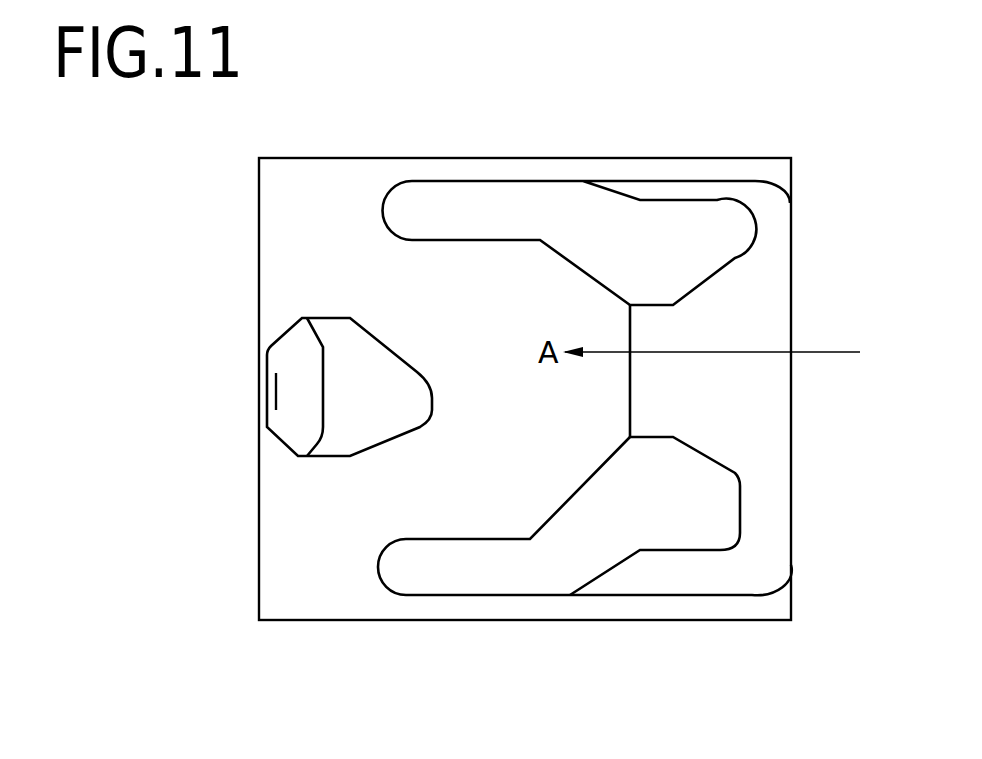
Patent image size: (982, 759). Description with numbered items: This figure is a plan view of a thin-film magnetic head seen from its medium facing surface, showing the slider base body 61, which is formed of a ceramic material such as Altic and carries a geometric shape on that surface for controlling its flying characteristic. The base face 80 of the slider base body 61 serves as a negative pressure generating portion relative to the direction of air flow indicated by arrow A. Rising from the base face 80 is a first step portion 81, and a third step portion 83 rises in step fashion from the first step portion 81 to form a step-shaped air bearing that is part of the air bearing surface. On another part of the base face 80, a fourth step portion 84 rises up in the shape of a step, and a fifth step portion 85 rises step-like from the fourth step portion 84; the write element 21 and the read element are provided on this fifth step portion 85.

The slider base body 61 is at (357, 158).
The first step portion 81 is at (538, 203).
The third step portion 83 is at (537, 567).
The base face 80 is at (417, 497).
The fourth step portion 84 is at (372, 360).
The fifth step portion 85 is at (305, 425).
The write element 21 is at (275, 400).